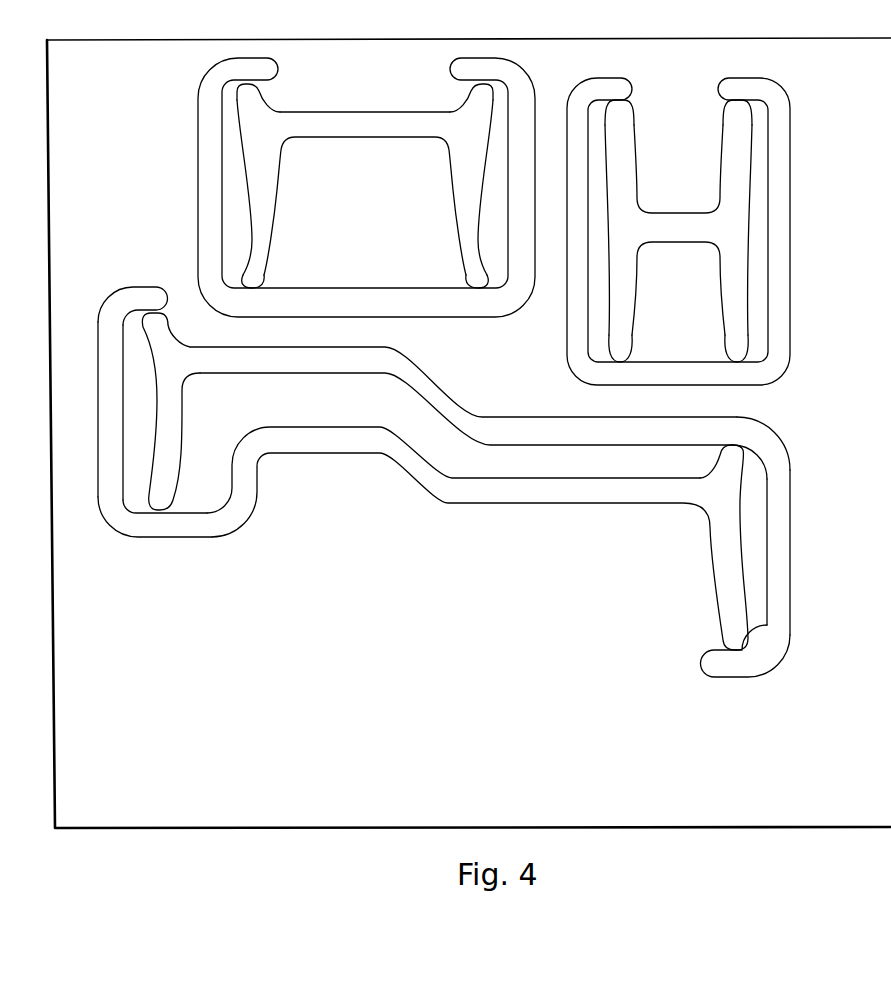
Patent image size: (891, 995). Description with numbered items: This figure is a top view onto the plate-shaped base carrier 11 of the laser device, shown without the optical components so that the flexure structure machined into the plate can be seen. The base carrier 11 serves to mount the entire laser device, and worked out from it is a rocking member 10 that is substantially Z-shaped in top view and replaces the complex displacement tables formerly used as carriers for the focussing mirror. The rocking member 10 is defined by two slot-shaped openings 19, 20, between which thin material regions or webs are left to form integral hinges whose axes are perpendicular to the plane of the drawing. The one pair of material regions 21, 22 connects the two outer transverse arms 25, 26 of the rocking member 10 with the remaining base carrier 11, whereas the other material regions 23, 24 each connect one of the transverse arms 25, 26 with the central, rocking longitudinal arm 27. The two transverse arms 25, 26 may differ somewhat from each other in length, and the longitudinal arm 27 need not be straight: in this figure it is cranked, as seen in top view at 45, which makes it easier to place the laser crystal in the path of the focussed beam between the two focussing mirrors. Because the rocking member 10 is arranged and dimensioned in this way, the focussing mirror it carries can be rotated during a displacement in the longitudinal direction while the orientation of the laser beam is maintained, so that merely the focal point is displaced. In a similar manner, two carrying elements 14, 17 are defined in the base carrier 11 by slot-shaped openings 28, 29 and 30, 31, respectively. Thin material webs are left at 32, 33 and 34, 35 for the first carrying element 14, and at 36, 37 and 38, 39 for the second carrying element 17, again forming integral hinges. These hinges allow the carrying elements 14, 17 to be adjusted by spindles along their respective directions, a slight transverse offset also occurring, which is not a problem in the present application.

The rocking member 10 is at (455, 486).
The base carrier 11 is at (135, 747).
The carrying element 14 is at (340, 187).
The carrying element 17 is at (709, 231).
The slot-shaped opening 19 is at (468, 418).
The slot-shaped opening 20 is at (455, 493).
The material region 21 is at (157, 313).
The material region 22 is at (740, 650).
The material region 23 is at (160, 510).
The material region 24 is at (733, 445).
The transverse arm 25 is at (133, 413).
The transverse arm 26 is at (757, 548).
The longitudinal arm 27 is at (307, 408).
The slot-shaped opening 28 is at (212, 203).
The slot-shaped opening 29 is at (319, 184).
The slot-shaped opening 30 is at (777, 173).
The slot-shaped opening 31 is at (728, 229).
The thin material web 32 is at (255, 87).
The thin material web 33 is at (467, 85).
The thin material web 34 is at (263, 282).
The thin material web 35 is at (470, 282).
The thin material web 36 is at (625, 100).
The thin material web 37 is at (728, 102).
The thin material web 38 is at (632, 355).
The thin material web 39 is at (727, 355).
The cranked portion 45 is at (400, 412).